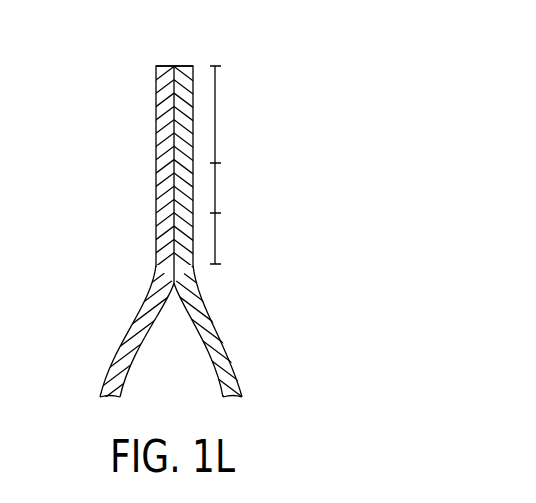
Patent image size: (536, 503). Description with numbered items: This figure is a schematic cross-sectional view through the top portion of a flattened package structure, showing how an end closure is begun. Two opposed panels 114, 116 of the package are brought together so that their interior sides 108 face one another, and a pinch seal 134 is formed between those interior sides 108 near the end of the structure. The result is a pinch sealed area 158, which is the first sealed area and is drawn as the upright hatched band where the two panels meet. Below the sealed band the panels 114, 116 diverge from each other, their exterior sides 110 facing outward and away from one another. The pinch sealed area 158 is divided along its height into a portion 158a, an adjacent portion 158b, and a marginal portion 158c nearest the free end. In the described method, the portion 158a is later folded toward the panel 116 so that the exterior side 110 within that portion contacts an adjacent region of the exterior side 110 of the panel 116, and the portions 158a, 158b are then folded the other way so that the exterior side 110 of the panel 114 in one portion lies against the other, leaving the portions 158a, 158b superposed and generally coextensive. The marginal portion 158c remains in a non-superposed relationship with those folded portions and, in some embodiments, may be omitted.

The interior side 108 is at (218, 379).
The exterior side 110 is at (108, 368).
The panel 114 is at (137, 327).
The panel 116 is at (205, 325).
The pinch seal 134 is at (173, 75).
The pinch sealed area 158 is at (150, 66).
The portion of pinch sealed area 158a is at (236, 238).
The portion of pinch sealed area 158b is at (236, 188).
The marginal portion 158c is at (236, 114).